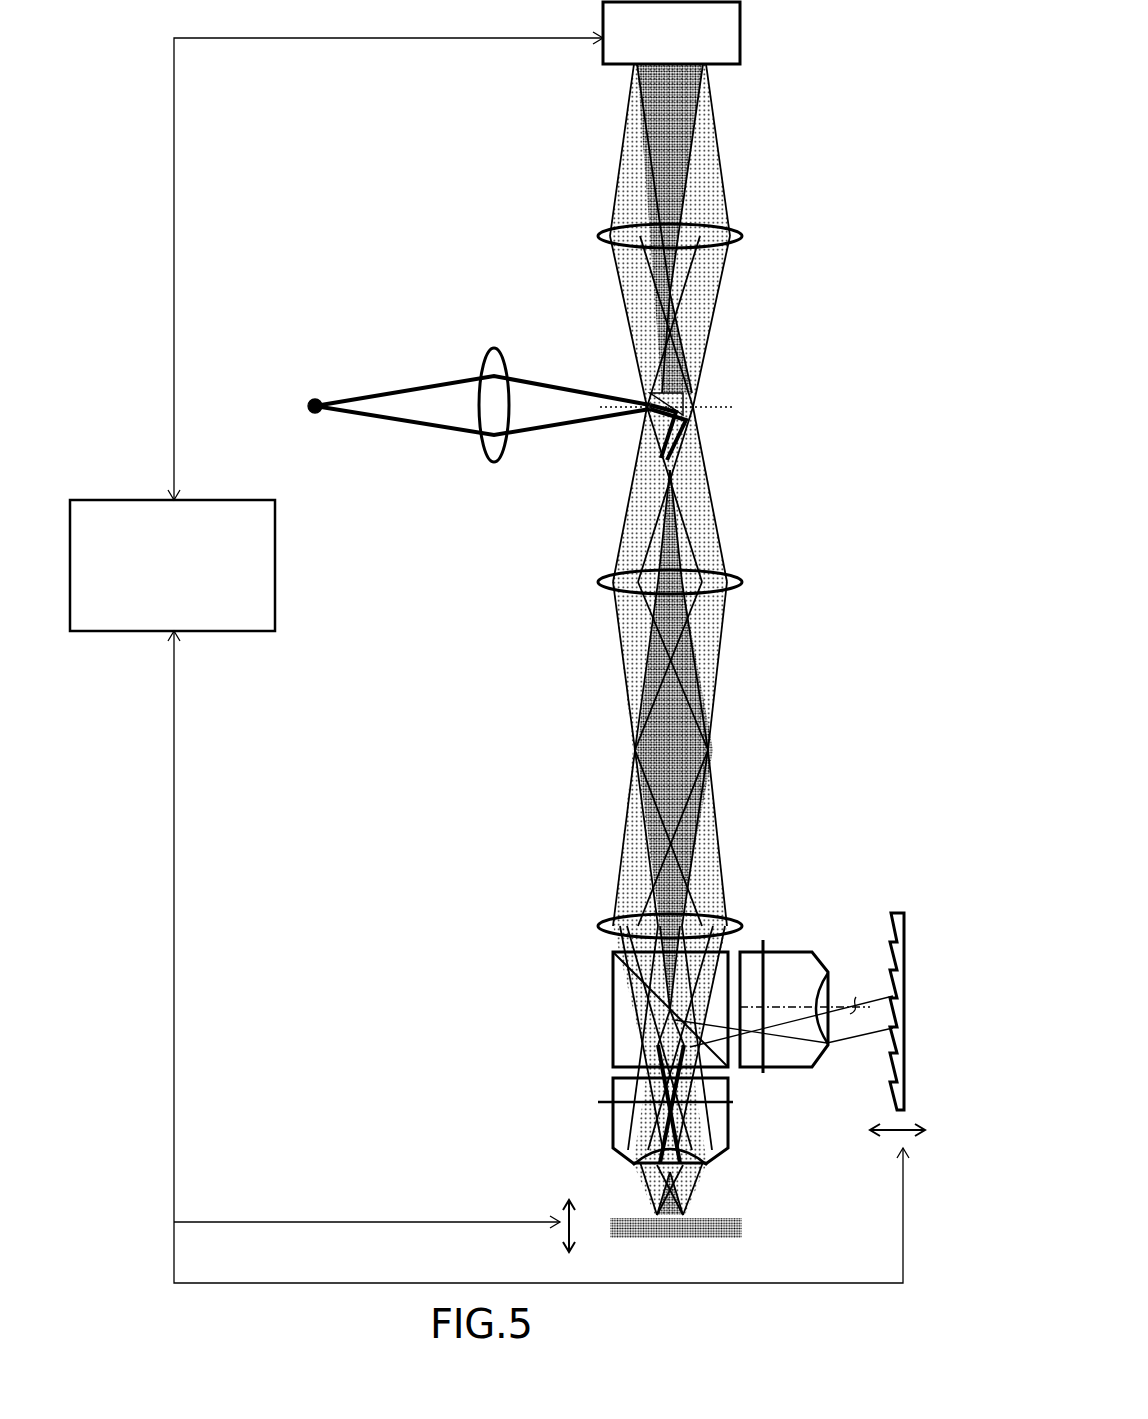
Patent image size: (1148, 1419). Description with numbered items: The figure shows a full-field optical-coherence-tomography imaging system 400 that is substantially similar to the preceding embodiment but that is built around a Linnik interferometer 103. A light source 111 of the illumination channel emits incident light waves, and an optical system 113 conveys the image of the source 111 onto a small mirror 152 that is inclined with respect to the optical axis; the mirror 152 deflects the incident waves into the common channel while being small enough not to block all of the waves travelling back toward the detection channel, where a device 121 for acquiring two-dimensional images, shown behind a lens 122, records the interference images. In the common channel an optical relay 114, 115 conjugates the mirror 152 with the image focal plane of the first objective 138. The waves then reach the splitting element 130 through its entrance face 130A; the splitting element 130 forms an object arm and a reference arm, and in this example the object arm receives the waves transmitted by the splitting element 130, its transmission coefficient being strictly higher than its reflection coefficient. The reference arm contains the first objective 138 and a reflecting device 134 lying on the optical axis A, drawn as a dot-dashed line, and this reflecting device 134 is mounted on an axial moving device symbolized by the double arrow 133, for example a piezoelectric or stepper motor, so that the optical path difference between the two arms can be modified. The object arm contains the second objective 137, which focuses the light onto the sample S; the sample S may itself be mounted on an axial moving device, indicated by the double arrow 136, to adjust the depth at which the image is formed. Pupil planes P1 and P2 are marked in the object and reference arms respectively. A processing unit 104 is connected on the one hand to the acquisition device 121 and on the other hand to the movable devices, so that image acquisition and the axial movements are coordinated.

The measurement apparatus 400 is at (114, 34).
The interferometer 103 is at (548, 967).
The processing unit 104 is at (276, 566).
The light source 111 is at (315, 398).
The optical system 113 is at (494, 348).
The optical relay 114 is at (744, 582).
The optical relay 115 is at (739, 926).
The device for acquiring two-dimensional images 121 is at (742, 38).
The imaging lens 122 is at (742, 236).
The splitting element 130 is at (612, 1035).
The entrance face 130A is at (730, 950).
The axial moving device 133 is at (889, 1136).
The reflecting device 134 is at (893, 913).
The sample stage drive direction 136 is at (574, 1240).
The second objective 137 is at (612, 1118).
The first objective 138 is at (808, 952).
The small mirror 152 is at (688, 400).
The pupil plane of objective P1 is at (712, 1103).
The pupil plane of reference arm P2 is at (775, 1050).
The optical axis A is at (849, 994).
The sample S is at (746, 1228).